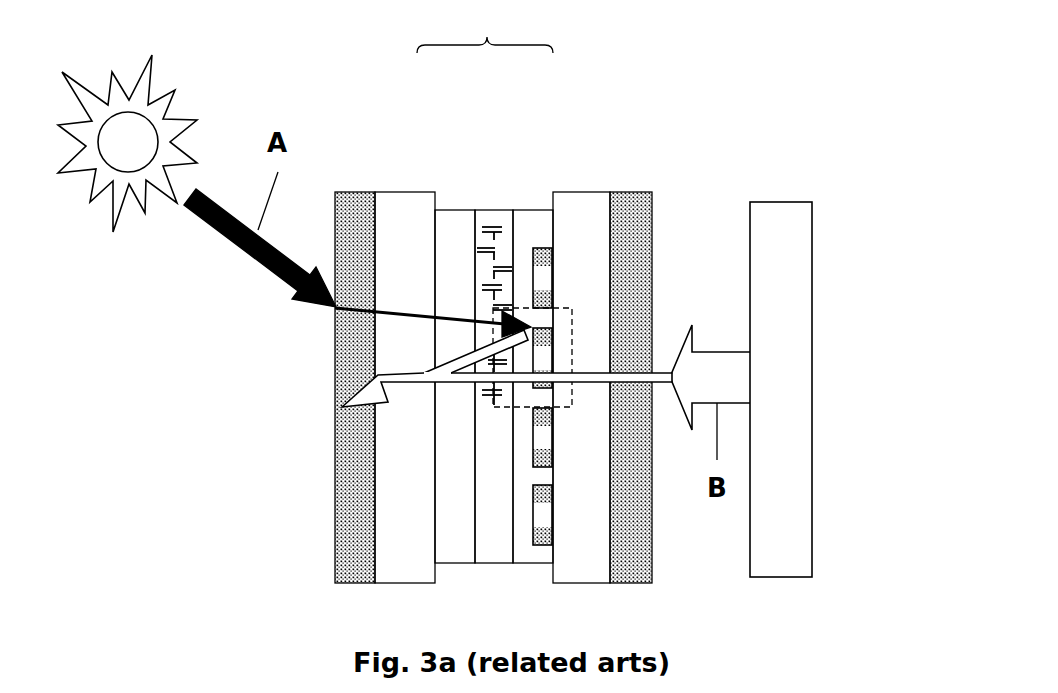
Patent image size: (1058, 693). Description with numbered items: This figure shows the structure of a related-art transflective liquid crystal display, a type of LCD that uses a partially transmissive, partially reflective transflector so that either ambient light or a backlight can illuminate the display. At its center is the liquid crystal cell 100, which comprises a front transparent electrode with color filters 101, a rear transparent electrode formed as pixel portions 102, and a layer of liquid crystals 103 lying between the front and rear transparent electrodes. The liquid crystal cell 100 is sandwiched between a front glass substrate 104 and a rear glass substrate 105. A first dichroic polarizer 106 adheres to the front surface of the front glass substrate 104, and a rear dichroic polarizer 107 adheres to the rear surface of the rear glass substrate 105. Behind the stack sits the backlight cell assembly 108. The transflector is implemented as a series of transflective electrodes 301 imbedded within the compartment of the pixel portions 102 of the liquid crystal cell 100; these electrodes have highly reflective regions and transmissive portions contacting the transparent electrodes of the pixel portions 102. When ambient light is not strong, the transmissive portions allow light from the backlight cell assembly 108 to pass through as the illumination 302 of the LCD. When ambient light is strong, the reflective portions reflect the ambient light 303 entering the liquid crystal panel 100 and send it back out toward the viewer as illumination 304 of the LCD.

The liquid crystal cell 100 is at (485, 26).
The front transparent electrode with color filters 101 is at (455, 230).
The rear transparent electrode (pixel portions) 102 is at (533, 230).
The layer of liquid crystals 103 is at (493, 227).
The front glass substrate 104 is at (395, 210).
The rear glass substrate 105 is at (573, 210).
The first dichroic polarizer 106 is at (355, 210).
The rear dichroic polarizer 107 is at (635, 210).
The backlight cell assembly 108 is at (790, 400).
The transflective electrodes 301 is at (533, 282).
The illumination from backlight 302 is at (337, 365).
The ambient light entering the liquid crystal panel 303 is at (415, 320).
The illumination from reflected ambient light 304 is at (340, 405).